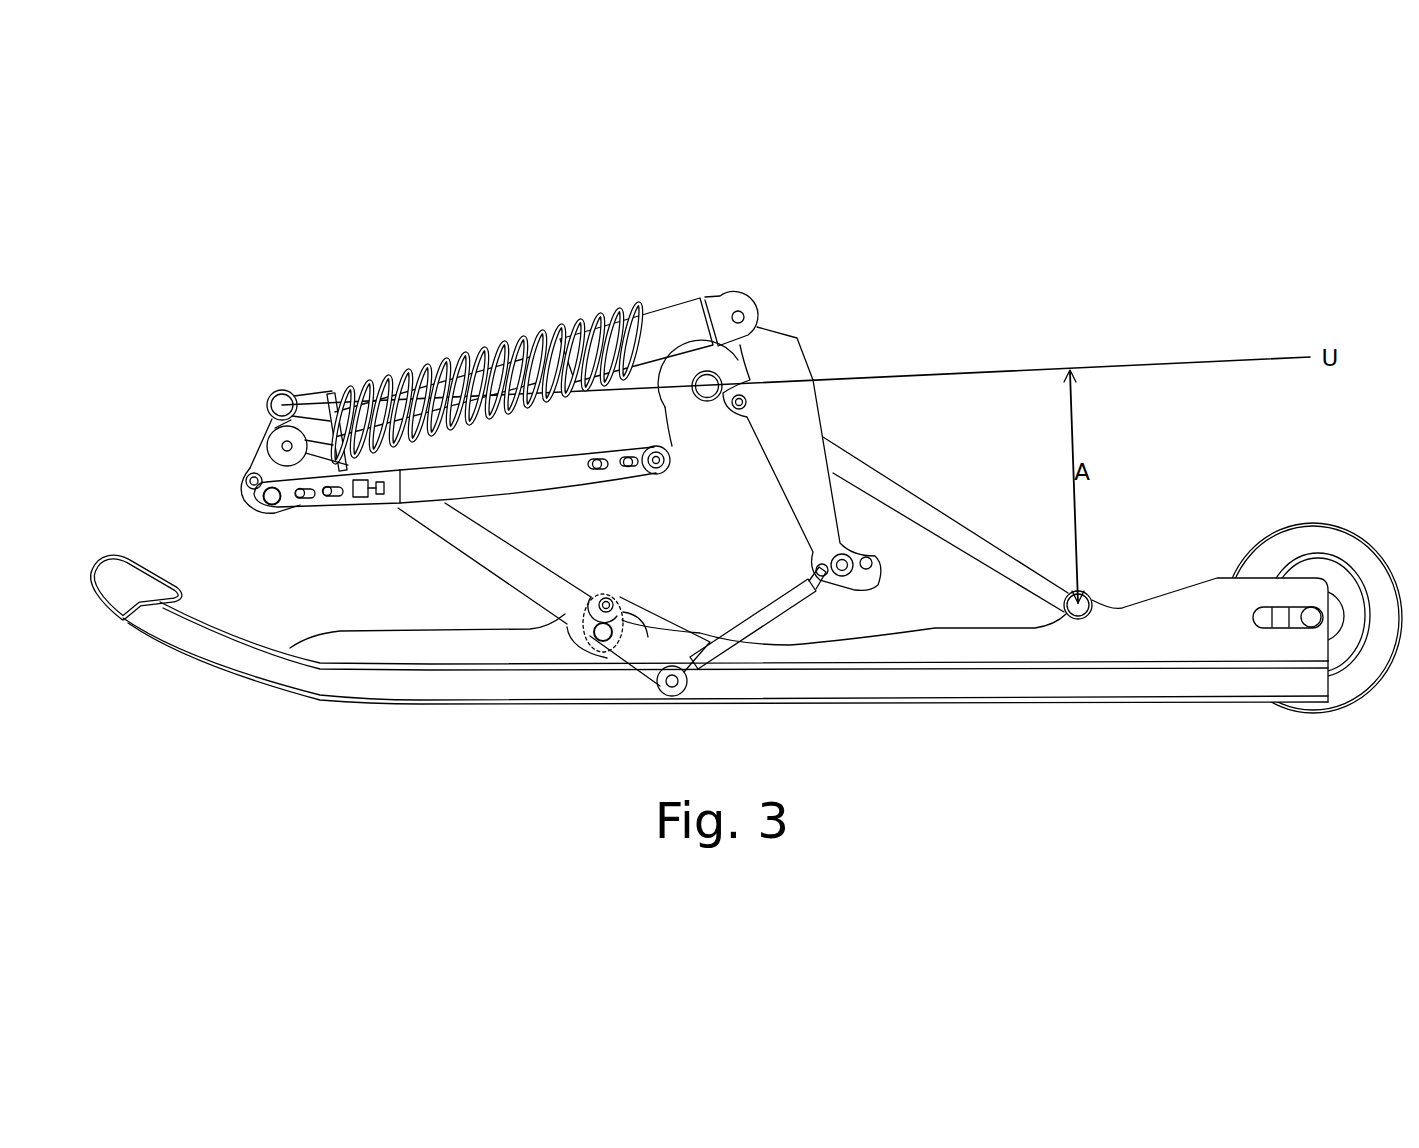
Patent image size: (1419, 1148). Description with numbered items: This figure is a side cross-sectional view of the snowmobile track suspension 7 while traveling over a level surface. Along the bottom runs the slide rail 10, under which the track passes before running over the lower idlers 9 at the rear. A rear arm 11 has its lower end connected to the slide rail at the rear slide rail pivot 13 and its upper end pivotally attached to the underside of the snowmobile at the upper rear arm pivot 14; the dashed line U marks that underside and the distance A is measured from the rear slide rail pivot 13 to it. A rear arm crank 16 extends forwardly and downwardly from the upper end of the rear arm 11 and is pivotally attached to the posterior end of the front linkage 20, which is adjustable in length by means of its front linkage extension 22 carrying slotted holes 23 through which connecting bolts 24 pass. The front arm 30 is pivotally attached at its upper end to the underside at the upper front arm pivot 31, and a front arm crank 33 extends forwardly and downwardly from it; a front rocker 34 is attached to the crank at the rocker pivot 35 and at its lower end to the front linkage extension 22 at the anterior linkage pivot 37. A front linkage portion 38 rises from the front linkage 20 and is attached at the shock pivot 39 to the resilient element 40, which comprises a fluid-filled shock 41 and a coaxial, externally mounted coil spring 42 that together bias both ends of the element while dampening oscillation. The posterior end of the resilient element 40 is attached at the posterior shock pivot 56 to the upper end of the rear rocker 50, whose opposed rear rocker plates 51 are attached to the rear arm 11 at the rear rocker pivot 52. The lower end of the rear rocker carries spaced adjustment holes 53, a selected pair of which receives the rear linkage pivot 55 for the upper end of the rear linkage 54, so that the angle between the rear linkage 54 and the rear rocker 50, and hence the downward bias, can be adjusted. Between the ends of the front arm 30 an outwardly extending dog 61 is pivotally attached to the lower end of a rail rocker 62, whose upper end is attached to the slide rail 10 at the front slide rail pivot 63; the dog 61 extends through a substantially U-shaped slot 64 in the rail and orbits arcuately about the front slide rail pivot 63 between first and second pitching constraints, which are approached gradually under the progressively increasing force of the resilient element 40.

The track suspension 7 is at (257, 290).
The lower idlers 9 is at (1372, 545).
The slide rail 10 is at (180, 653).
The rear arm 11 is at (948, 515).
The rear slide rail pivot 13 is at (1092, 610).
The upper rear arm pivot 14 is at (715, 403).
The rear arm crank 16 is at (688, 449).
The front linkage 20 is at (677, 531).
The front linkage extension 22 is at (291, 510).
The slotted holes 23 is at (313, 498).
The connecting bolts 24 is at (302, 499).
The front arm 30 is at (463, 545).
The upper front arm pivot 31 is at (268, 401).
The front arm crank 33 is at (268, 427).
The front rocker 34 is at (249, 499).
The rocker pivot 35 is at (247, 482).
The anterior linkage pivot 37 is at (270, 507).
The front linkage portion 38 is at (252, 459).
The shock pivot 39 is at (283, 446).
The resilient element 40 is at (532, 248).
The fluid-filled shock 41 is at (685, 300).
The coil spring 42 is at (473, 356).
The rear rocker 50 is at (850, 297).
The rear rocker plate 51 is at (822, 421).
The rear rocker pivot 52 is at (743, 412).
The adjustment holes 53 is at (870, 571).
The rear linkage 54 is at (781, 610).
The rear linkage pivot 55 is at (843, 578).
The posterior shock pivot 56 is at (745, 318).
The dog 61 is at (603, 643).
The rail rocker 62 is at (618, 611).
The front slide rail pivot 63 is at (620, 601).
The U-shaped slot 64 is at (571, 648).